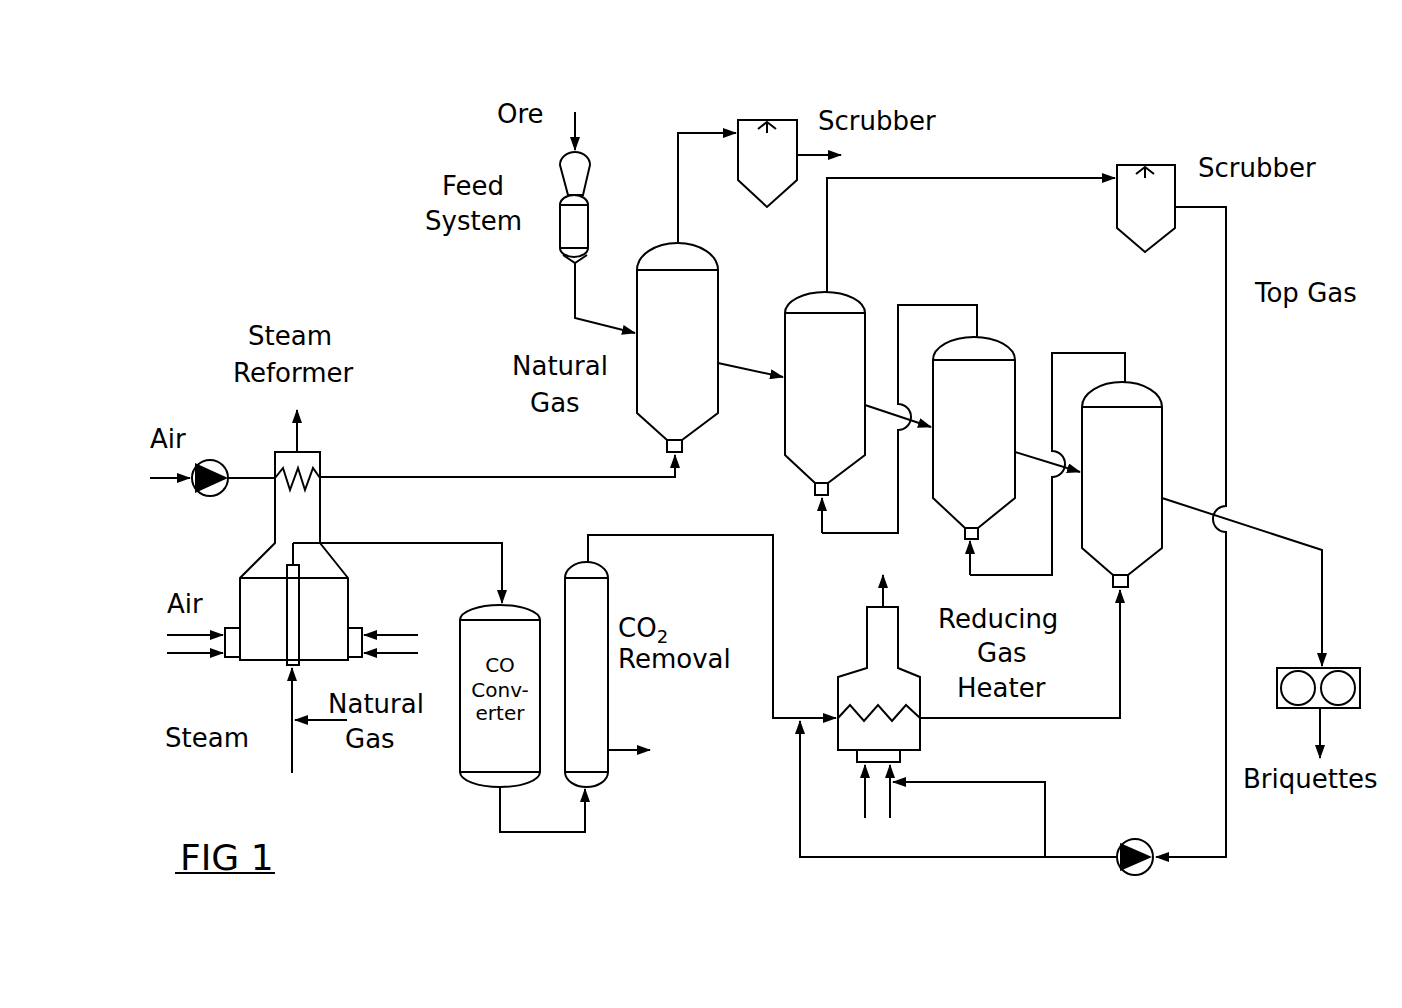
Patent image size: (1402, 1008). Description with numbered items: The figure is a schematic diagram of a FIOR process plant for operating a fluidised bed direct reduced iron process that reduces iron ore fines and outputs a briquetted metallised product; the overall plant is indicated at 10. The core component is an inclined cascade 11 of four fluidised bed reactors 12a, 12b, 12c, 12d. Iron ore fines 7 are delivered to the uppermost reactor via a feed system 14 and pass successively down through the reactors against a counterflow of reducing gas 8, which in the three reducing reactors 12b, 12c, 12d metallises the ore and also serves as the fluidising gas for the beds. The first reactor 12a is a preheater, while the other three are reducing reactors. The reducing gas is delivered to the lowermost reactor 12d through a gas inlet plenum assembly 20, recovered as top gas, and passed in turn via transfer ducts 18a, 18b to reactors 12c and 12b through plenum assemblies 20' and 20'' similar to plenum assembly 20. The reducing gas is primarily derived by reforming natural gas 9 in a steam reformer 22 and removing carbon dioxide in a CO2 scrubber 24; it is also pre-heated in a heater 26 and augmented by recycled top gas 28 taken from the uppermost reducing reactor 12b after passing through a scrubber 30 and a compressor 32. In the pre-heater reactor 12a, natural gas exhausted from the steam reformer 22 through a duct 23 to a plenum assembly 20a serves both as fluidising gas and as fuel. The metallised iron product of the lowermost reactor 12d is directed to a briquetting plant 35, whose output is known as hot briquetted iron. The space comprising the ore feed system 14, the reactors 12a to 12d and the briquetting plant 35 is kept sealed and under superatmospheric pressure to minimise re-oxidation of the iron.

The iron ore fines 7 is at (575, 122).
The reducing gas 8 is at (1120, 655).
The natural gas 9 is at (292, 753).
The direct reduction plant 10 is at (362, 226).
The inclined cascade 11 is at (1218, 454).
The first reactor 12a is at (697, 247).
The reducing reactor 12b is at (843, 290).
The reducing reactor 12c is at (995, 338).
The lowermost reactor 12d is at (1142, 385).
The feed system 14 is at (558, 238).
The transfer duct 18a is at (1112, 353).
The transfer duct 18b is at (955, 303).
The gas inlet plenum assembly 20 is at (1156, 584).
The plenum assembly 20a is at (667, 445).
The plenum assembly 20' is at (944, 551).
The plenum assembly 20'' is at (783, 500).
The steam reformer 22 is at (248, 554).
The duct 23 is at (437, 477).
The CO2 scrubber 24 is at (597, 717).
The heater 26 is at (918, 737).
The recycled top gas 28 is at (1080, 857).
The scrubber 30 is at (1127, 165).
The compressor 32 is at (1142, 873).
The briquetting plant 35 is at (1355, 668).